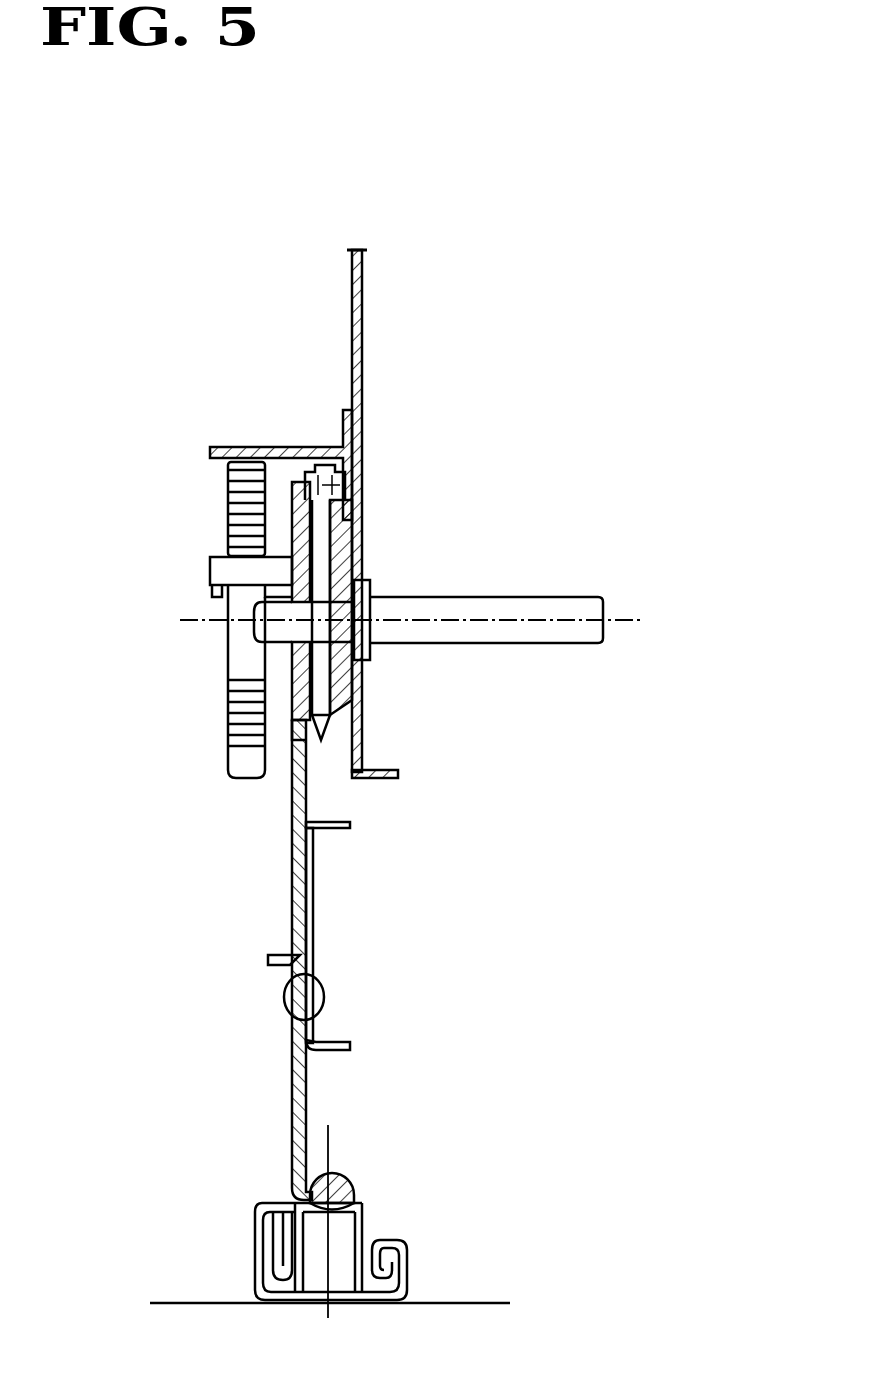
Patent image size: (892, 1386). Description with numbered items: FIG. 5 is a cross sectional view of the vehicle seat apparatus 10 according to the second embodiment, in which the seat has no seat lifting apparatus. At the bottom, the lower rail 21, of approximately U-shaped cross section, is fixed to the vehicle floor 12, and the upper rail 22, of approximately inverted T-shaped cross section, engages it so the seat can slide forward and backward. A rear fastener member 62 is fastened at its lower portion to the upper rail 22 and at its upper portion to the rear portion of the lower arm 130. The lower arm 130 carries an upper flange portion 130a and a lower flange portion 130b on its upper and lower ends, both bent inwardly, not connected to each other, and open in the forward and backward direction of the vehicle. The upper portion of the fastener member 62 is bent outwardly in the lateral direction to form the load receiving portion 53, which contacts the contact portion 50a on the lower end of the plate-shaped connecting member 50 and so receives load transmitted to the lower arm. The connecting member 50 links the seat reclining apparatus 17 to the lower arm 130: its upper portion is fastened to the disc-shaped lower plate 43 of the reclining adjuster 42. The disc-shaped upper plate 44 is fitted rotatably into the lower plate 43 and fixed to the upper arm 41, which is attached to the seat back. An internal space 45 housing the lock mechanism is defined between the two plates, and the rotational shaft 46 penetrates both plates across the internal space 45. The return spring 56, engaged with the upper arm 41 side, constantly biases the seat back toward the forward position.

The vehicle seat apparatus 10 is at (266, 332).
The upper arm 41 is at (364, 305).
The seat reclining apparatus 17 is at (394, 466).
The reclining adjuster 42 is at (282, 496).
The upper plate 44 is at (356, 548).
The rotational shaft 46 is at (515, 598).
The return spring 56 is at (233, 703).
The internal space 45 is at (330, 688).
The lower plate 43 is at (298, 720).
The connecting member 50 is at (295, 804).
The lower arm 130 is at (315, 872).
The upper flange portion 130a is at (360, 826).
The lower flange portion 130b is at (340, 1050).
The load receiving portion 53 is at (292, 958).
The contact portion 50a is at (293, 978).
The fastener member 62 is at (296, 1118).
The upper rail 22 is at (368, 1215).
The lower rail 21 is at (262, 1232).
The vehicle floor 12 is at (478, 1302).